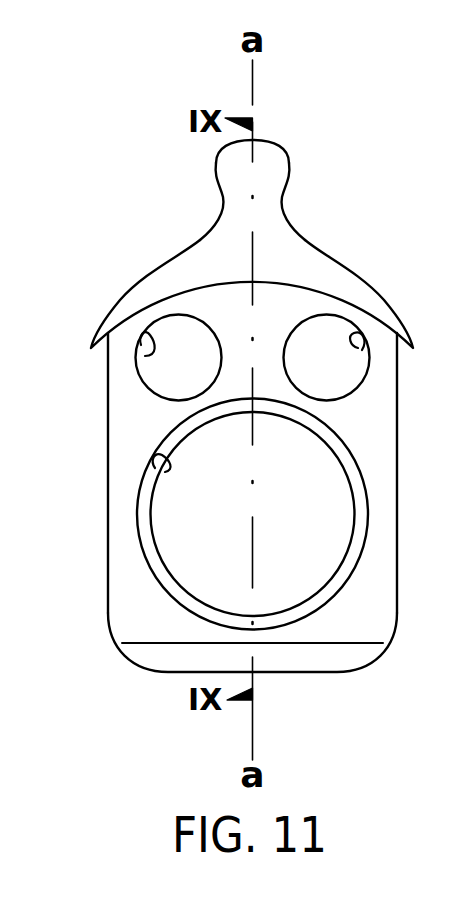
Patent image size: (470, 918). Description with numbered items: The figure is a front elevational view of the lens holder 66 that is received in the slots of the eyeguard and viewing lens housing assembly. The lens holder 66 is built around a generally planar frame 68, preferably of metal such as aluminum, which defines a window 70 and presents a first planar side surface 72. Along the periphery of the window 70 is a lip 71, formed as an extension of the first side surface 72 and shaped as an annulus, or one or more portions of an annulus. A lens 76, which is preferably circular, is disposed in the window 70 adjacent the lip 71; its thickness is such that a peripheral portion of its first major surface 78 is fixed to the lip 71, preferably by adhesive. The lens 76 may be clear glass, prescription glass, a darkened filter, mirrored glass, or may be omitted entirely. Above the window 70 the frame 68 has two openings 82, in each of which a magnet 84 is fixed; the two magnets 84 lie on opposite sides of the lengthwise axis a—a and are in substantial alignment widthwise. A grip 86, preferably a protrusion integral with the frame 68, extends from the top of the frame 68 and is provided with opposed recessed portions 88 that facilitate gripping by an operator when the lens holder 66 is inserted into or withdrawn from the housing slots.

The lens holder 66 is at (124, 226).
The frame 68 is at (114, 438).
The window 70 is at (165, 472).
The lip 71 is at (141, 523).
The first planar side surface 72 is at (133, 610).
The lens 76 is at (227, 570).
The first major surface 78 is at (301, 527).
The opening 82 is at (145, 360).
The magnet 84 is at (165, 379).
The grip 86 is at (270, 141).
The recessed portions 88 is at (222, 200).